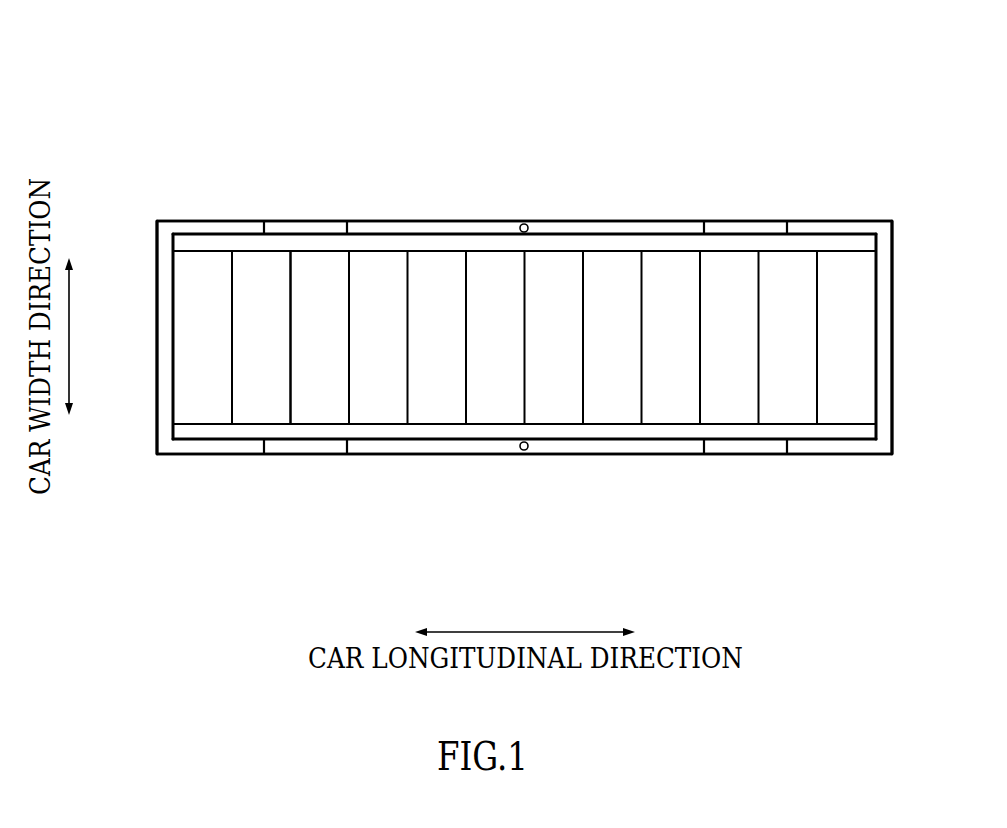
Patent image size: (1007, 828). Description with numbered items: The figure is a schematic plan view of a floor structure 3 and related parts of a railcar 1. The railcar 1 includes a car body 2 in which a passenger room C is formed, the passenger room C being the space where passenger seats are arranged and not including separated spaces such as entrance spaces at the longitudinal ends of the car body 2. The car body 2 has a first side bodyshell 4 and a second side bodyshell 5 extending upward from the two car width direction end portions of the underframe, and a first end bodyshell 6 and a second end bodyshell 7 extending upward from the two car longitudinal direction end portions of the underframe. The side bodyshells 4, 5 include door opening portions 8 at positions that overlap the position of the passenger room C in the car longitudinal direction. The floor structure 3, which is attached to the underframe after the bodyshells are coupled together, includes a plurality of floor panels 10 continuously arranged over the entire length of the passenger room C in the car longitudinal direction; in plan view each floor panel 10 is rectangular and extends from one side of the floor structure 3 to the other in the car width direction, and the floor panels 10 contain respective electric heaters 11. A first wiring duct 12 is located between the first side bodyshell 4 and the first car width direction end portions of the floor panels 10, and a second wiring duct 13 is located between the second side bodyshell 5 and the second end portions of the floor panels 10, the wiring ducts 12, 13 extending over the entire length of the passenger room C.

The railcar 1 is at (189, 138).
The car body 2 is at (855, 215).
The floor structure 3 is at (664, 410).
The first side bodyshell 4 is at (412, 222).
The second side bodyshell 5 is at (411, 455).
The first end bodyshell 6 is at (893, 325).
The second end bodyshell 7 is at (157, 326).
The door opening portions 8 is at (298, 222).
The floor panels 10 is at (617, 272).
The electric heaters 11 is at (555, 395).
The first wiring duct 12 is at (492, 240).
The second wiring duct 13 is at (489, 440).
The passenger room C is at (258, 393).